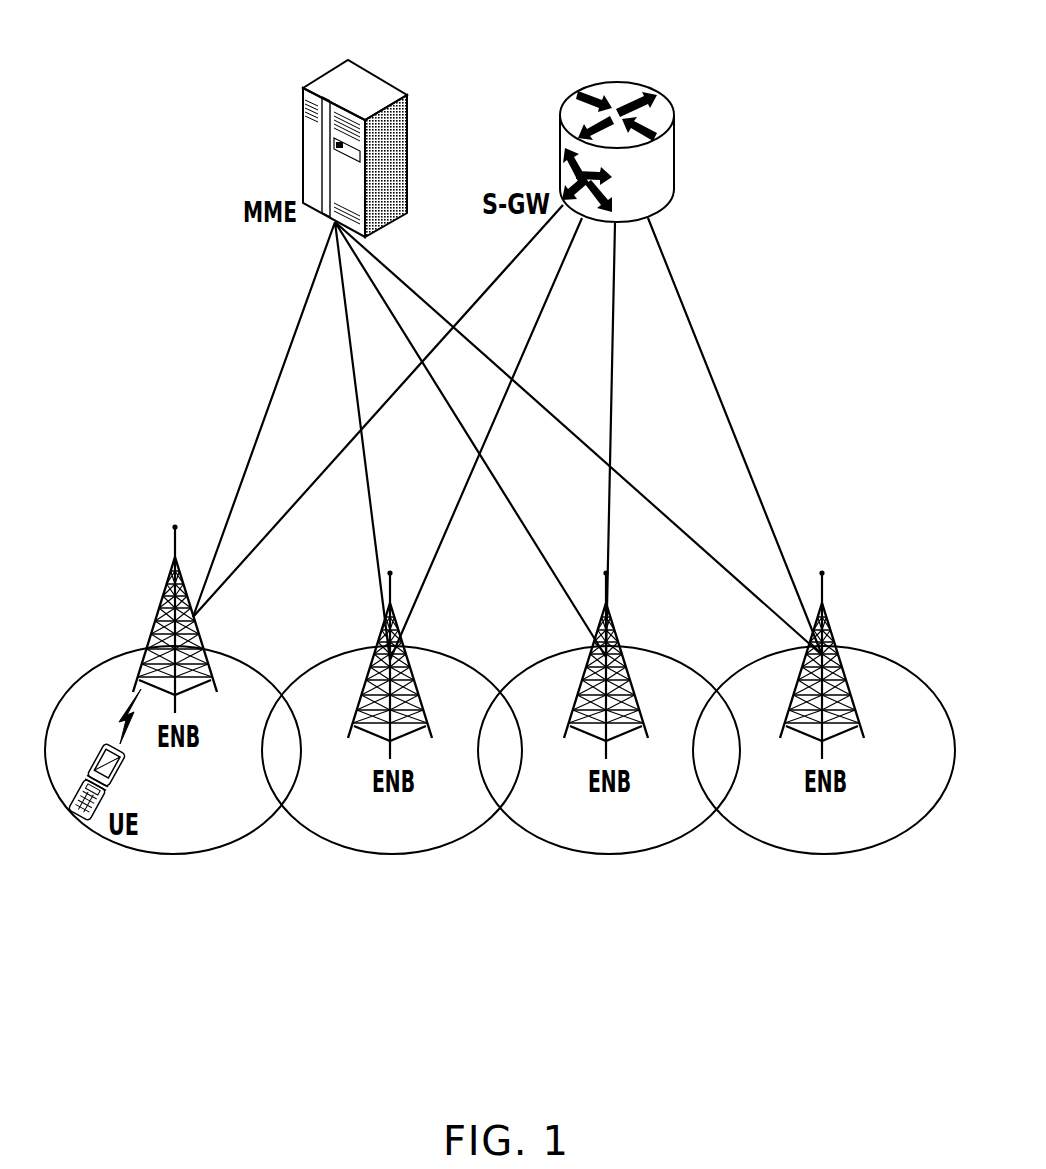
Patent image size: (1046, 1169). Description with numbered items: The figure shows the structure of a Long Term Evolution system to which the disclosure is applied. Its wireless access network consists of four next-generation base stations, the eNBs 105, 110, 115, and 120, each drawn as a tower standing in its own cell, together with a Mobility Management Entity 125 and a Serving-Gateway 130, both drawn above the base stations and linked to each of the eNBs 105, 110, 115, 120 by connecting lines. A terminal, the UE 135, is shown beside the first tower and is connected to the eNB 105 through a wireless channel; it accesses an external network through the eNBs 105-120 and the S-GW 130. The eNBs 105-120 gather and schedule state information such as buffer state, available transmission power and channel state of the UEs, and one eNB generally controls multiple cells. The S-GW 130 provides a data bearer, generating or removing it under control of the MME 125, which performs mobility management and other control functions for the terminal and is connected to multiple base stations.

The eNB 105 is at (160, 598).
The eNB 110 is at (383, 625).
The eNB 115 is at (615, 622).
The eNB 120 is at (827, 622).
The Mobility Management Entity 125 is at (338, 83).
The Serving-Gateway 130 is at (613, 90).
The UE 135 is at (122, 775).